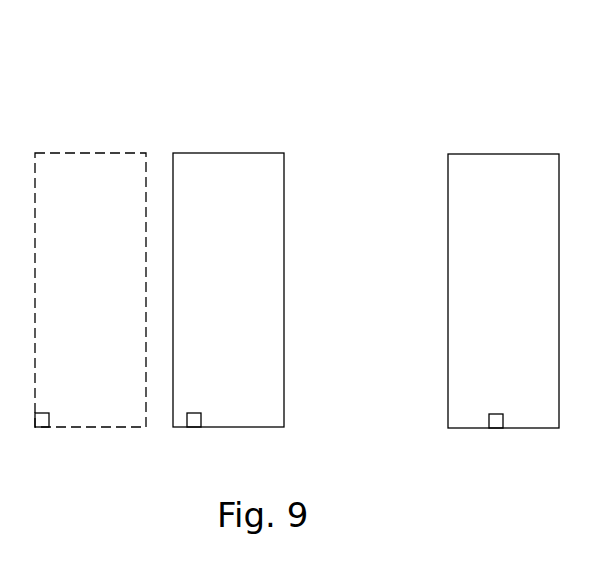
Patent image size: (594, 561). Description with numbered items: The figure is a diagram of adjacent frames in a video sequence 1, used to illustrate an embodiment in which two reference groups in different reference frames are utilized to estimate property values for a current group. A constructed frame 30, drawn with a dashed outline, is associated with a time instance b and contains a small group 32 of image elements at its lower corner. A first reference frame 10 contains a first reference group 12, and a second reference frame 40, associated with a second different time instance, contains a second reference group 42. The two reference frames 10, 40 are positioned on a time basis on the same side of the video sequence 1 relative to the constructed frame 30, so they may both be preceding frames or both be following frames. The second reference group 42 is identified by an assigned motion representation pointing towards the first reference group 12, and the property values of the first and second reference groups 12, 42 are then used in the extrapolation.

The video sequence 1 is at (208, 65).
The first reference frame 10 is at (225, 153).
The first reference group 12 is at (201, 413).
The constructed frame 30 is at (90, 153).
The second communication unit 32 is at (49, 413).
The second reference frame 40 is at (503, 154).
The second reference group 42 is at (503, 414).